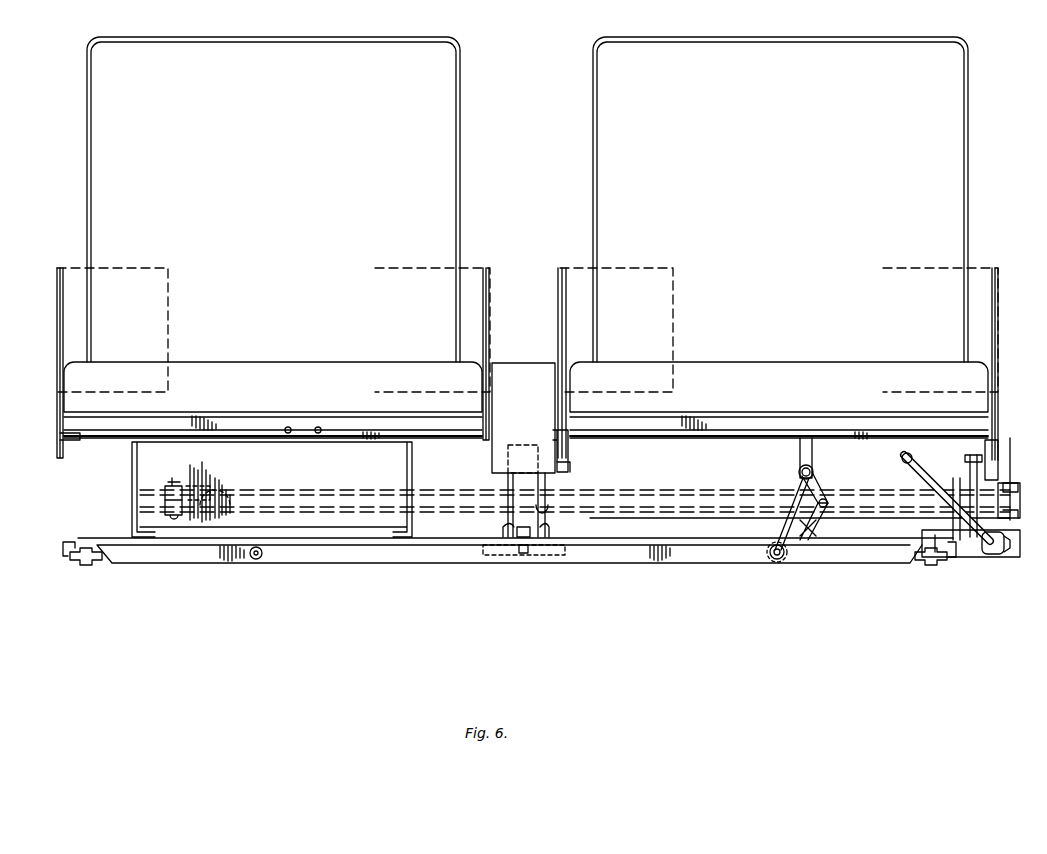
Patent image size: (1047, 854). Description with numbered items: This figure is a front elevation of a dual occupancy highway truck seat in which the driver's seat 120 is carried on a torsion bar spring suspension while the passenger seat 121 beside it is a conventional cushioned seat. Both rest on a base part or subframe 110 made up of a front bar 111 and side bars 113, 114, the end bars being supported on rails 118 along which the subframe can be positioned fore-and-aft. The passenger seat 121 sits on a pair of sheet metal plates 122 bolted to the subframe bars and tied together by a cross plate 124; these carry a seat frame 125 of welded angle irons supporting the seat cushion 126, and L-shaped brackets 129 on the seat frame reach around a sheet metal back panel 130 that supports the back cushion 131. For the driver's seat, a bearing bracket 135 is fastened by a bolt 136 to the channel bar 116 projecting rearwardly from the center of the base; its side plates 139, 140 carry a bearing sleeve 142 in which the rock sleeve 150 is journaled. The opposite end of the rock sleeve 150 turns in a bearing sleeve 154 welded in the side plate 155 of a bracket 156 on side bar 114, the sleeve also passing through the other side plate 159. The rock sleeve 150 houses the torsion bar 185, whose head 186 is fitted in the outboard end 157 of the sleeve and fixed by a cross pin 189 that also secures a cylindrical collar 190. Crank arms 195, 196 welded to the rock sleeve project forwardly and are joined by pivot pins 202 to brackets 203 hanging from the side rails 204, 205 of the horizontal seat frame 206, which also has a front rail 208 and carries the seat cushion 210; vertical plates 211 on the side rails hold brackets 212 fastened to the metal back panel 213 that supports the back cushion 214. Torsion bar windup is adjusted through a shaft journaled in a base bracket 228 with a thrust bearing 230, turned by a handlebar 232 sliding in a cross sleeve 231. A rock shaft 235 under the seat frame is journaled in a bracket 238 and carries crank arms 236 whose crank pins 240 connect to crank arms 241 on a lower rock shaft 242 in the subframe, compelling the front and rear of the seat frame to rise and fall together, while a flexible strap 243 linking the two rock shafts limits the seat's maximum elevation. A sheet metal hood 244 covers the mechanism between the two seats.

The base part or subframe 110 is at (140, 566).
The front bar 111 is at (350, 556).
The side bar 113 is at (63, 547).
The side bar 114 is at (952, 560).
The channel bar 116 is at (483, 556).
The rails 118 is at (88, 568).
The driver's seat part or seat frame 120 is at (590, 73).
The passenger seat part or frame 121 is at (84, 84).
The sheet metal plates 122 is at (132, 473).
The cross plate 124 is at (145, 491).
The seat frame 125 is at (60, 422).
The seat cushion 126 is at (255, 340).
The L-shaped bracket 129 is at (58, 316).
The sheet metal back panel 130 is at (92, 219).
The back cushion 131 is at (100, 176).
The bearing bracket 135 is at (505, 480).
The bolt 136 is at (525, 555).
The side plate 139 is at (550, 542).
The side plate 140 is at (505, 542).
The bearing sleeve 142 is at (523, 459).
The rock sleeve 150 is at (657, 490).
The bearing sleeve 154 is at (1002, 484).
The side plate 155 is at (998, 474).
The bracket 156 is at (955, 484).
The end of rock sleeve 157 is at (224, 495).
The side plate 159 is at (935, 520).
The torsion bar 185 is at (652, 508).
The head 186 is at (192, 492).
The cross pin 189 is at (173, 468).
The cylindrical collar 190 is at (168, 492).
The crank arm 195 is at (968, 455).
The crank arm 196 is at (553, 516).
The pivot pin 202 is at (966, 462).
The bracket 203 is at (572, 466).
The side rail 204 is at (992, 440).
The side rail 205 is at (572, 452).
The seat frame 206 is at (812, 412).
The front rail 208 is at (737, 390).
The seat cushion 210 is at (852, 340).
The vertical plate 211 is at (563, 424).
The bracket 212 is at (560, 274).
The metal back panel 213 is at (962, 170).
The back cushion 214 is at (940, 190).
The bracket 228 is at (1008, 550).
The thrust bearing 230 is at (996, 556).
The cross sleeve 231 is at (984, 560).
The handlebar 232 is at (928, 473).
The rock shaft 235 is at (814, 470).
The crank arms 236 is at (825, 482).
The bracket 238 is at (800, 455).
The crank pin 240 is at (826, 506).
The crank arm 241 is at (822, 538).
The rock shaft 242 is at (776, 560).
The flexible strap 243 is at (792, 518).
The sheet metal hood or cover 244 is at (538, 340).